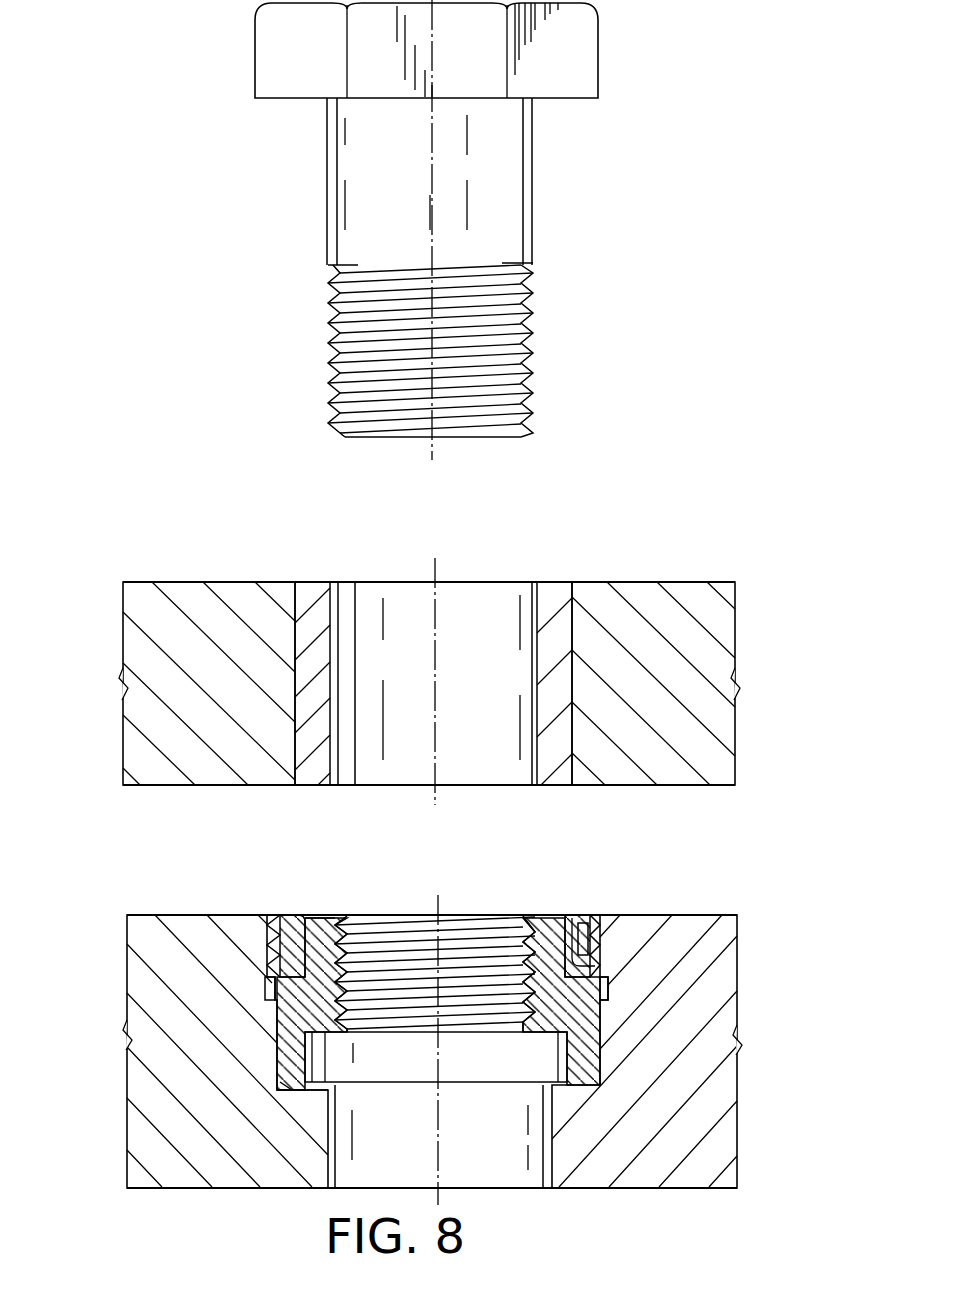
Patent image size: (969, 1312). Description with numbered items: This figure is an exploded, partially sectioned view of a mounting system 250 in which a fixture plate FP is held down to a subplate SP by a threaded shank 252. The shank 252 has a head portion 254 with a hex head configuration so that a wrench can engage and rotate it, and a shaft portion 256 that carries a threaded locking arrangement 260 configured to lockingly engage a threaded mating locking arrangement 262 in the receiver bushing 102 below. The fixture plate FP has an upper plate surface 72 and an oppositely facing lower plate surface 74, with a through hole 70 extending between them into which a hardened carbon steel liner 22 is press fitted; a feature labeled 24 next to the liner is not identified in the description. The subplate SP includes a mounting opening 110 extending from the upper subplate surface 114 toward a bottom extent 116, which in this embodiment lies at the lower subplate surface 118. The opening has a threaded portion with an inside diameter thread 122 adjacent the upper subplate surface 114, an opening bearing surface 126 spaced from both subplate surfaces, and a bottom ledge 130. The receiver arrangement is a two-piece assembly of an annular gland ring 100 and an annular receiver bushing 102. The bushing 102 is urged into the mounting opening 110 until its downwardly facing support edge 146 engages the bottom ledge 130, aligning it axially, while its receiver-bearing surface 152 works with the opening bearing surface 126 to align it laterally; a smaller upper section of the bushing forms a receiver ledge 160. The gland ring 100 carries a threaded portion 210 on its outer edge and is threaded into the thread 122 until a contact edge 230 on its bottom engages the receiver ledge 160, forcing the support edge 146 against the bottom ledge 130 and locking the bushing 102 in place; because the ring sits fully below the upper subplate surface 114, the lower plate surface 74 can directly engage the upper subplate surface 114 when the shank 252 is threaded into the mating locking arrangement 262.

The mounting system 250 is at (475, 230).
The shank 252 is at (614, 79).
The head portion 254 is at (272, 65).
The shaft portion 256 is at (532, 227).
The threaded locking arrangement 260 is at (533, 350).
The fixture plate FP is at (443, 667).
The upper plate surface 72 is at (190, 582).
The lower plate surface 74 is at (667, 786).
The through hole 70 is at (295, 598).
The liner 22 is at (560, 580).
The bore 24 is at (535, 608).
The subplate SP is at (422, 1037).
The upper subplate surface 114 is at (175, 915).
The lower subplate surface 118 is at (672, 1187).
The bottom extent 116 is at (516, 1187).
The annular gland ring 100 is at (285, 913).
The receiver bushing 102 is at (321, 910).
The mounting opening 110 is at (576, 910).
The opening bearing surface 126 is at (282, 1038).
The inside diameter thread 122 is at (268, 961).
The contact edge 230 is at (273, 984).
The receiver-bearing surface 152 is at (605, 1021).
The threaded portion 210 is at (605, 939).
The receiver ledge 160 is at (600, 965).
The threaded mating locking arrangement 262 is at (518, 955).
The bottom ledge 130 is at (558, 1086).
The support edge 146 is at (300, 1088).